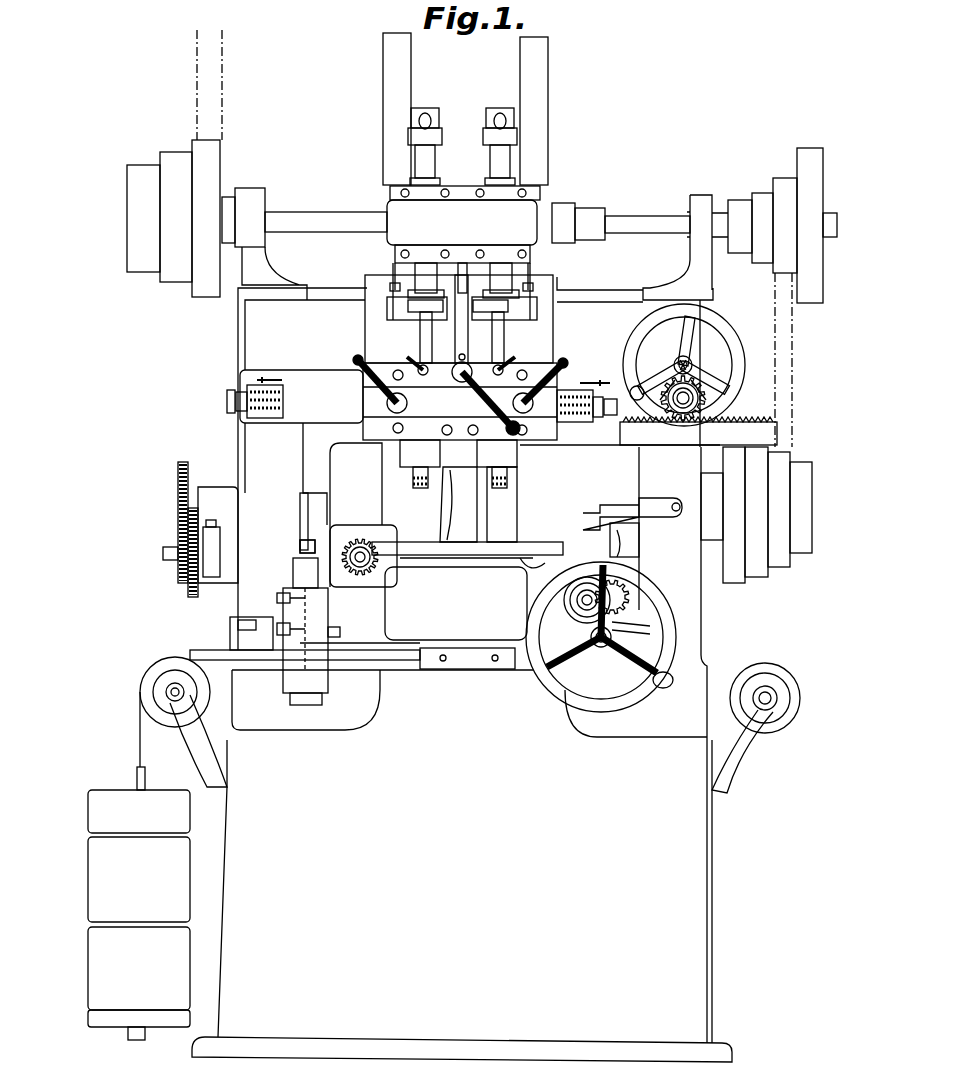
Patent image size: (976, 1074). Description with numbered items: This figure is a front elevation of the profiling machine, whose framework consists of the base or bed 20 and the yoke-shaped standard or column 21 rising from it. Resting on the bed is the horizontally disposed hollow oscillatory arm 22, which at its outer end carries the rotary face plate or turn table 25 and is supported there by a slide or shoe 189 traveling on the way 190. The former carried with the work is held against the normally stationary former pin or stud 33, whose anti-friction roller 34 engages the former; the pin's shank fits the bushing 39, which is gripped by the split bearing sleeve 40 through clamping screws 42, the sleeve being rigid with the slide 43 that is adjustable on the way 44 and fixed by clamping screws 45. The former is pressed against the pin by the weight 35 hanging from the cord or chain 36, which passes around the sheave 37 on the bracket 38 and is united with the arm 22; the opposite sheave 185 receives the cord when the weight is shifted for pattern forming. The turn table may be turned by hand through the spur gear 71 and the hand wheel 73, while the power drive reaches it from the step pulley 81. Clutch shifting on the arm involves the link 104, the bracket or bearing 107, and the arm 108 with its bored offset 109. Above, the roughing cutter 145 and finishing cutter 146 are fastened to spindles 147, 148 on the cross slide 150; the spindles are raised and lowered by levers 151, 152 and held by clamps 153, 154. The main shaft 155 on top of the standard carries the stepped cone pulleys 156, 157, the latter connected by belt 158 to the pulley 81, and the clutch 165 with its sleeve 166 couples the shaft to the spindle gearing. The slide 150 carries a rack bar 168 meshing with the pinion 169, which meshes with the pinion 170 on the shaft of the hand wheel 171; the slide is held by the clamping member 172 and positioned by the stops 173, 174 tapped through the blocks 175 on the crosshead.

The base or bed 20 is at (462, 866).
The standard or column 21 is at (236, 340).
The oscillatory member or arm 22 is at (456, 603).
The face plate or turn table 25 is at (440, 555).
The former pin or stud 33 is at (300, 543).
The anti-friction roller 34 is at (300, 512).
The weight 35 is at (139, 915).
The cord or chain 36 is at (137, 748).
The anti-friction roller or sheave 37 is at (142, 688).
The bracket 38 is at (198, 741).
The bushing 39 is at (293, 572).
The bearing sleeve 40 is at (325, 682).
The clamping screws 42 is at (282, 598).
The slide 43 is at (235, 640).
The way 44 is at (270, 661).
The clamping screws 45 is at (240, 622).
The spur gear 71 is at (640, 650).
The hand wheel 73 is at (632, 700).
The step pulley 81 is at (800, 497).
The link 104 is at (545, 565).
The bracket or bearing 107 is at (630, 538).
The arm 108 is at (602, 523).
The bored offset 109 is at (660, 505).
The roughing cutter 145 is at (420, 482).
The finishing cutter 146 is at (505, 480).
The spindle 147 is at (425, 158).
The spindle 148 is at (500, 160).
The slide 150 is at (382, 322).
The lever 151 is at (418, 122).
The lever 152 is at (500, 122).
The clamp 153 is at (390, 403).
The clamp 154 is at (205, 78).
The main shaft 155 is at (312, 212).
The stepped cone pulley 156 is at (178, 160).
The pulley 157 is at (805, 170).
The belt 158 is at (783, 370).
The clutch 165 is at (590, 220).
The sleeve 166 is at (562, 213).
The rack bar 168 is at (757, 435).
The pinion 169 is at (706, 399).
The pinion 170 is at (668, 355).
The hand wheel 171 is at (735, 352).
The clamping member 172 is at (466, 370).
The stop 173 is at (587, 418).
The stop 174 is at (287, 400).
The blocks 175 is at (265, 412).
The pulley or sheave 185 is at (800, 700).
The slide or shoe 189 is at (473, 669).
The way 190 is at (448, 670).